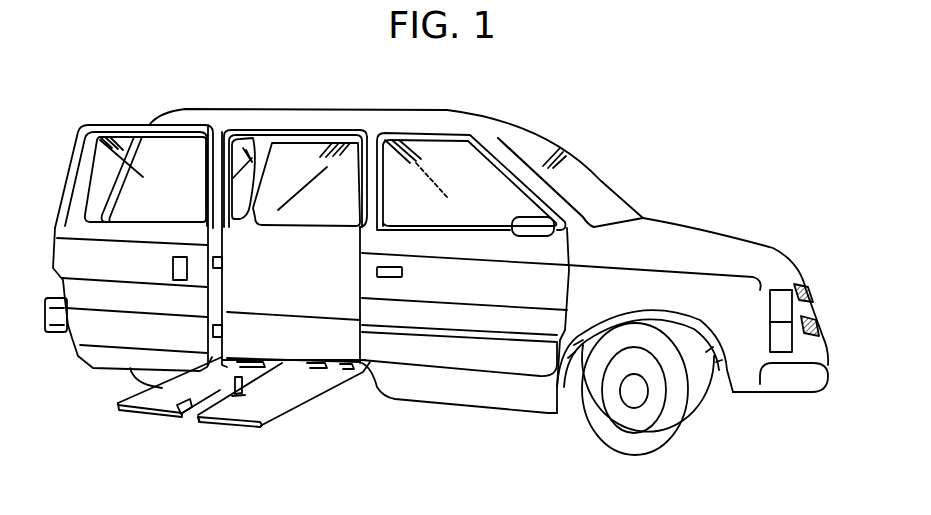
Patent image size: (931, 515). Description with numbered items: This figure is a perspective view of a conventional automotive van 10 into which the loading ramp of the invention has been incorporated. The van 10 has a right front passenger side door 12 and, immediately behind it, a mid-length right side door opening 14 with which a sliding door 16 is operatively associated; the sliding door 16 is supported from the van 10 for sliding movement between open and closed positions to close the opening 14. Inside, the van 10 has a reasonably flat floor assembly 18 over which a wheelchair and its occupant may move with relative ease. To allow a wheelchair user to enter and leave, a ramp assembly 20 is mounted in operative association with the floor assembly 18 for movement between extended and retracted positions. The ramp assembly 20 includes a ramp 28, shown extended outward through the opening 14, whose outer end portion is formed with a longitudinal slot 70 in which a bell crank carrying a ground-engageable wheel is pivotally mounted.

The automotive van 10 is at (447, 106).
The right front passenger side door 12 is at (500, 360).
The right side door opening 14 is at (310, 134).
The sliding door 16 is at (158, 127).
The floor assembly 18 is at (297, 328).
The ramp assembly 20 is at (303, 384).
The ramp 28 is at (231, 428).
The longitudinal slot 70 is at (178, 410).